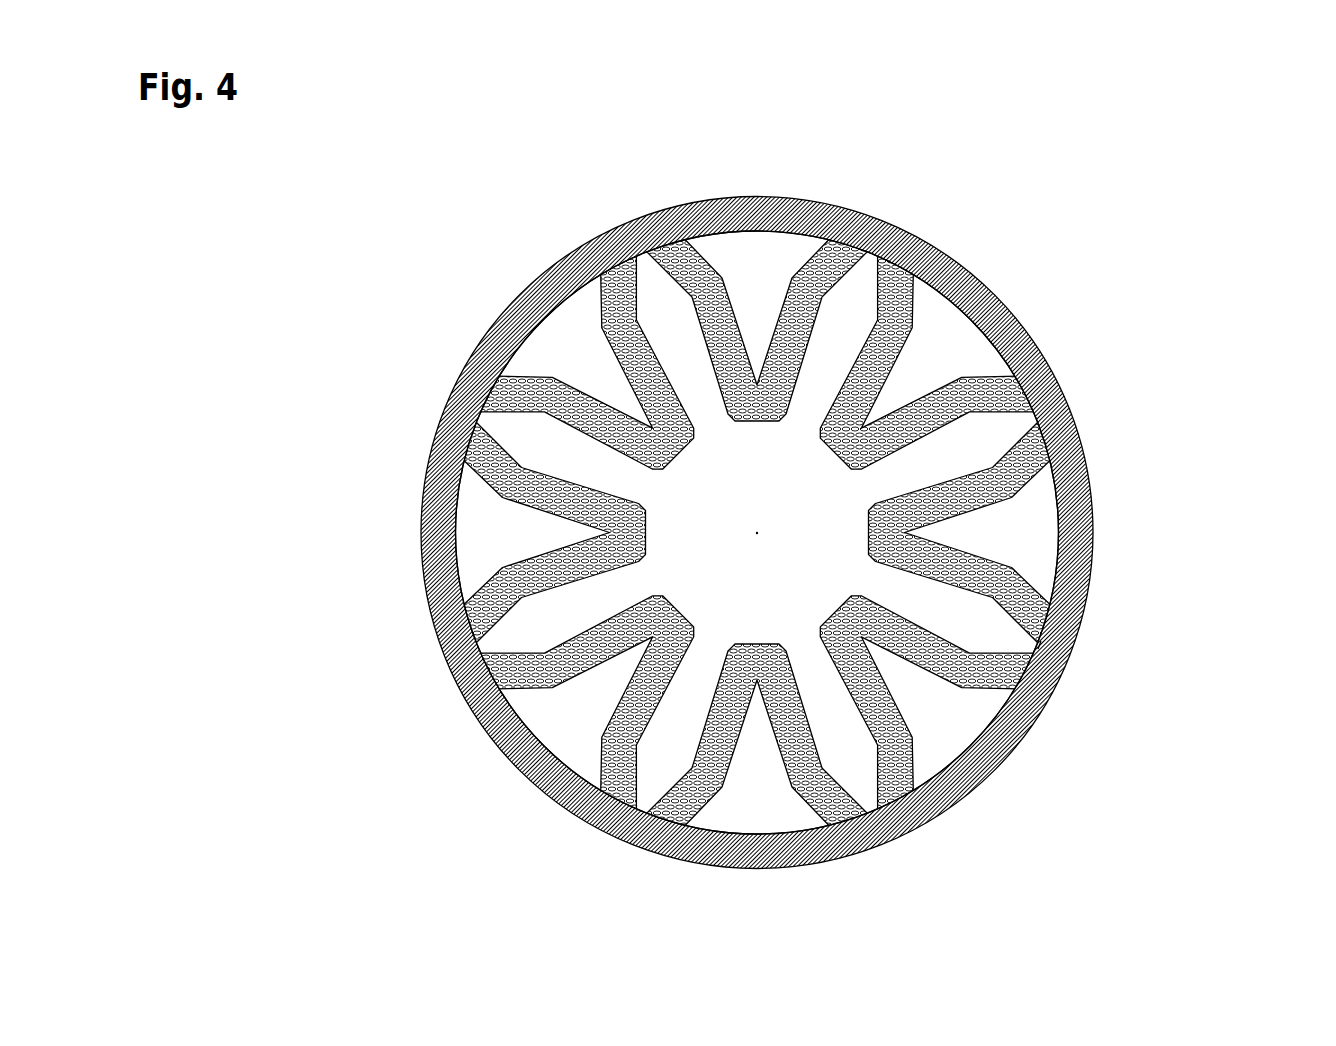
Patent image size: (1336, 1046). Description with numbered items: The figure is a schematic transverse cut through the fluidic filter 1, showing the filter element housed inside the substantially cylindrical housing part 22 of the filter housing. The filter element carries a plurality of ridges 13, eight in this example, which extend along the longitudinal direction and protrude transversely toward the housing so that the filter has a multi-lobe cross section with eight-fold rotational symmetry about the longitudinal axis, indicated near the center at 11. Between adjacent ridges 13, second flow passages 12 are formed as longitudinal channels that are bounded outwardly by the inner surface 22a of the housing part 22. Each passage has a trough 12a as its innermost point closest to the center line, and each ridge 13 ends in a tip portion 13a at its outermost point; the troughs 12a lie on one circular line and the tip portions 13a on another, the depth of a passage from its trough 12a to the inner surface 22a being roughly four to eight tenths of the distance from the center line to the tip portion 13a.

The fluidic filter 1 is at (422, 223).
The center shaft hole 11 is at (757, 533).
The second flow passage 12 is at (945, 337).
The trough 12a is at (863, 638).
The ridge 13 is at (1003, 588).
The tip portion 13a is at (1040, 645).
The housing part 22 is at (785, 215).
The inner surface 22a is at (463, 537).